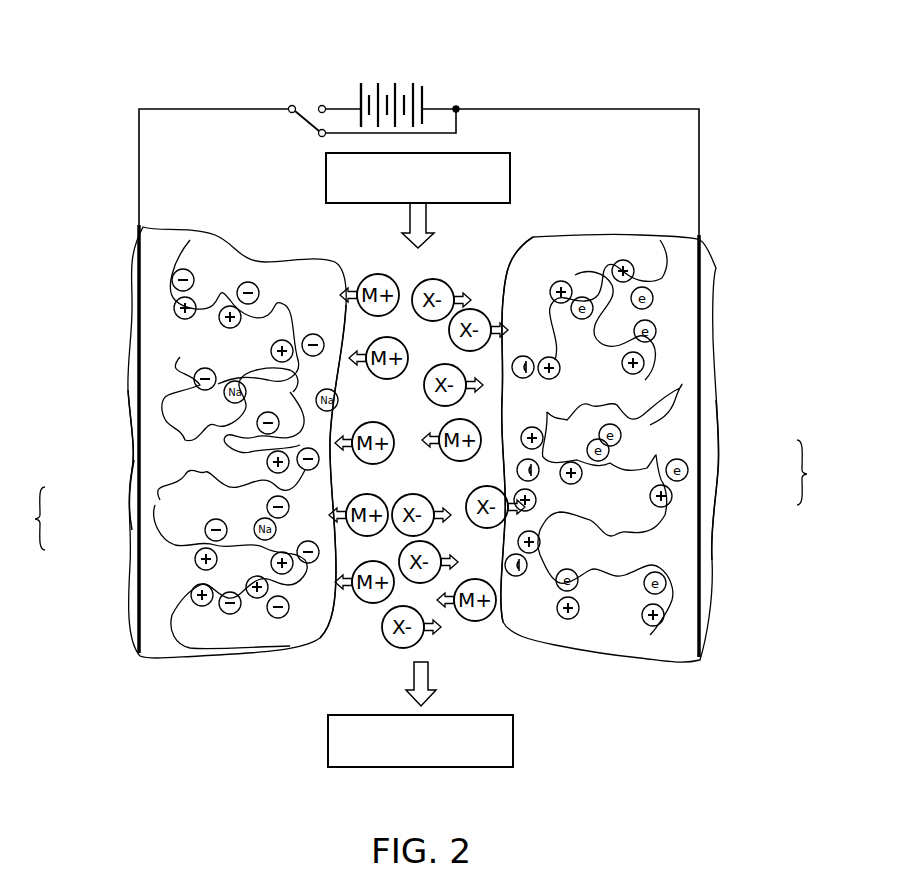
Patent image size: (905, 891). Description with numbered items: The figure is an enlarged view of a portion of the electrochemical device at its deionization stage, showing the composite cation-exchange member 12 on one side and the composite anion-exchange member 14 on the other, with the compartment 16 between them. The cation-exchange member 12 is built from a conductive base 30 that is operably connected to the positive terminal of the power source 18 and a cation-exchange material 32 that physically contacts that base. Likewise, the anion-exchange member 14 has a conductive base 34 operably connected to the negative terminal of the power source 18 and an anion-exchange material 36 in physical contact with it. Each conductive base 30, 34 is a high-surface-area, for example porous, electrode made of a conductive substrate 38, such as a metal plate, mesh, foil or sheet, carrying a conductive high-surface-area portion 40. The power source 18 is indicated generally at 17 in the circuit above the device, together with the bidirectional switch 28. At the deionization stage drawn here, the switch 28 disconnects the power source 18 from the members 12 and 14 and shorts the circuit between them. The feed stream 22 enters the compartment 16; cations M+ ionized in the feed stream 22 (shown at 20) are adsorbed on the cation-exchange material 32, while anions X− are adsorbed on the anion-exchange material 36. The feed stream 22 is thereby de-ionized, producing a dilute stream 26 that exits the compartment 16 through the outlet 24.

The composite cation-exchange member 12 is at (108, 247).
The composite anion-exchange member 14 is at (755, 246).
The compartment 16 is at (343, 597).
The power source 17 is at (400, 66).
The power source 18 is at (423, 101).
The cations 20 is at (375, 272).
The feed stream 22 is at (326, 187).
The outlet 24 is at (480, 622).
The dilute stream 26 is at (513, 735).
The bidirectional switch 28 is at (302, 110).
The conductive base 30 is at (26, 518).
The cation-exchange material 32 is at (228, 645).
The conductive base 34 is at (820, 472).
The anion-exchange material 36 is at (632, 655).
The conductive substrate 38 is at (148, 560).
The conductive high-surface-area portion 40 is at (153, 472).